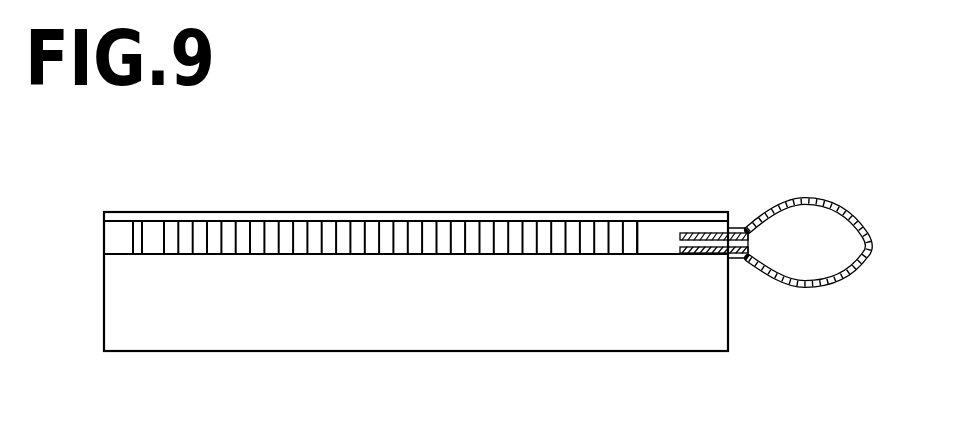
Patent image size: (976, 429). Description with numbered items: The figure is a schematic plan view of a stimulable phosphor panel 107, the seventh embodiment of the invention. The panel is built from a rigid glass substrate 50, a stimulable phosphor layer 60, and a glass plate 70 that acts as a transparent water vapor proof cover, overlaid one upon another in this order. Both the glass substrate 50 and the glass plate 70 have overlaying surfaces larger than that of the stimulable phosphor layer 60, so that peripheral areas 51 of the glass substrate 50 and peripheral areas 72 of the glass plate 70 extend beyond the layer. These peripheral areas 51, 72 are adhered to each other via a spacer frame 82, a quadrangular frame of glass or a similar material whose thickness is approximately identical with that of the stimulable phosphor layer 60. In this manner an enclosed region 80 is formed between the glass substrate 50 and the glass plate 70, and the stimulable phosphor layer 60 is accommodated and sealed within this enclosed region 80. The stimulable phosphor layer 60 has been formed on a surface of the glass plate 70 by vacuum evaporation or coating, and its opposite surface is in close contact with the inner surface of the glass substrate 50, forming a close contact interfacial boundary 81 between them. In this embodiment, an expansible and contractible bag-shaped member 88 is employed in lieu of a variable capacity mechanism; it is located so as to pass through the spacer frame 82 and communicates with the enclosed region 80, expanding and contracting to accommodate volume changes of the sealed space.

The stimulable phosphor panel 107 is at (473, 137).
The glass substrate 50 is at (710, 333).
The glass plate 70 is at (486, 216).
The stimulable phosphor layer 60 is at (560, 240).
The close contact interfacial boundary 81 is at (366, 245).
The peripheral areas of the glass plate 72 is at (127, 234).
The spacer frame 82 is at (112, 247).
The peripheral areas of the glass substrate 51 is at (138, 240).
The enclosed region 80 is at (668, 232).
The expansible and contractible bag-shaped member 88 is at (797, 197).